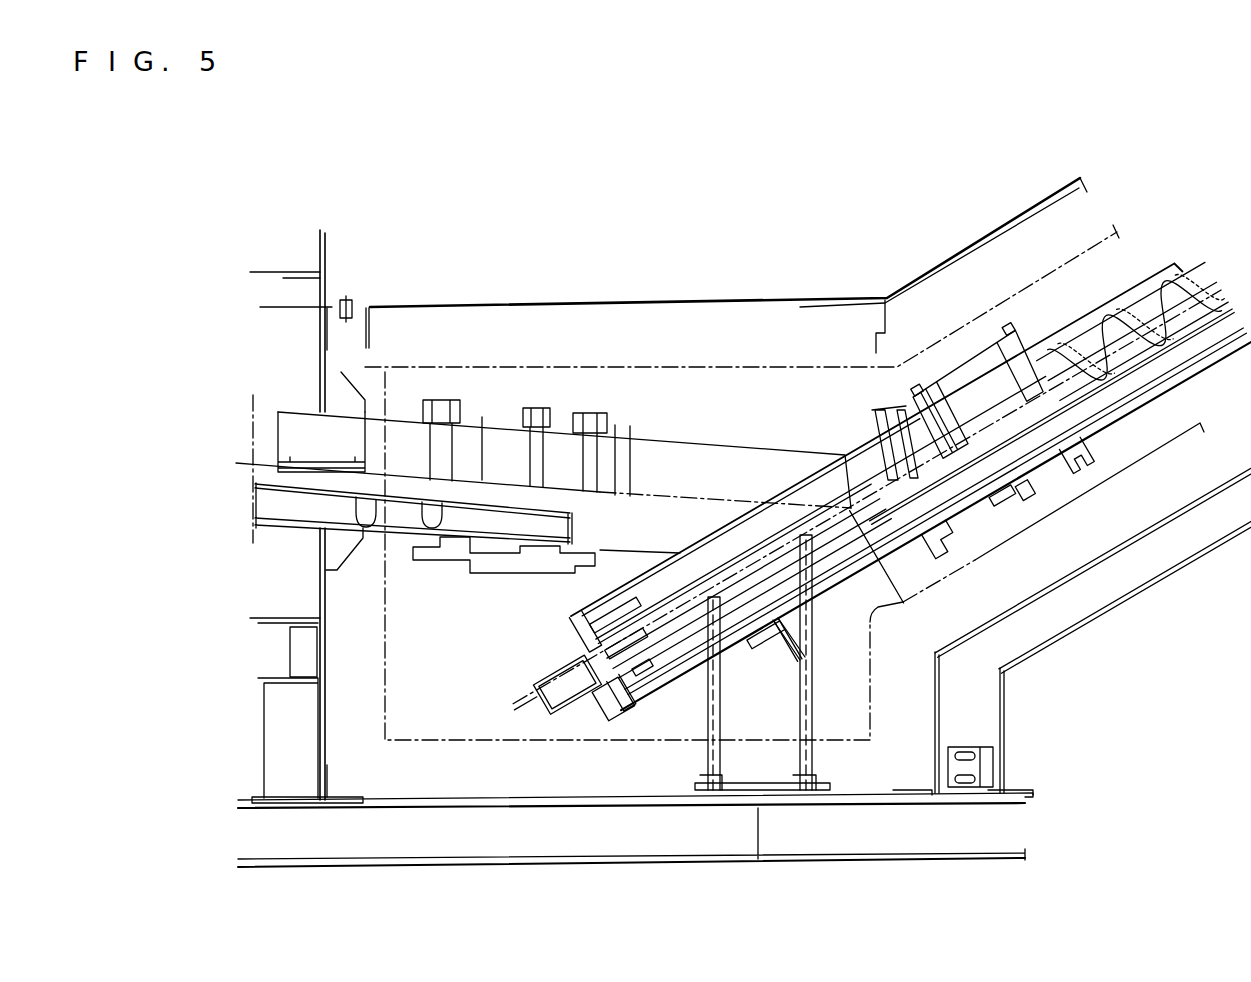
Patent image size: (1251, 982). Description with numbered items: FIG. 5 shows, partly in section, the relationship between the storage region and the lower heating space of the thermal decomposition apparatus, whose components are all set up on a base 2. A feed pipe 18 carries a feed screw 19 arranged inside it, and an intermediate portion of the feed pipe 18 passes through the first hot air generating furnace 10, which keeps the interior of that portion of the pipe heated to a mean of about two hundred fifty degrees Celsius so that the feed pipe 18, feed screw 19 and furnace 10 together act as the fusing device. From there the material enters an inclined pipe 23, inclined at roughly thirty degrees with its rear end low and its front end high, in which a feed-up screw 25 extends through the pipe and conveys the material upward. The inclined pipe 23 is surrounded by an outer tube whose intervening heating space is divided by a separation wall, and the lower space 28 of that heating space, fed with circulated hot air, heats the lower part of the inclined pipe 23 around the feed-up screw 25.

The base 2 is at (521, 845).
The first hot air generating furnace 10 is at (290, 340).
The feed pipe 18 is at (705, 445).
The feed screw 19 is at (379, 499).
The inclined pipe 23 is at (1170, 275).
The feed-up screw 25 is at (1127, 322).
The lower space 28 is at (665, 390).